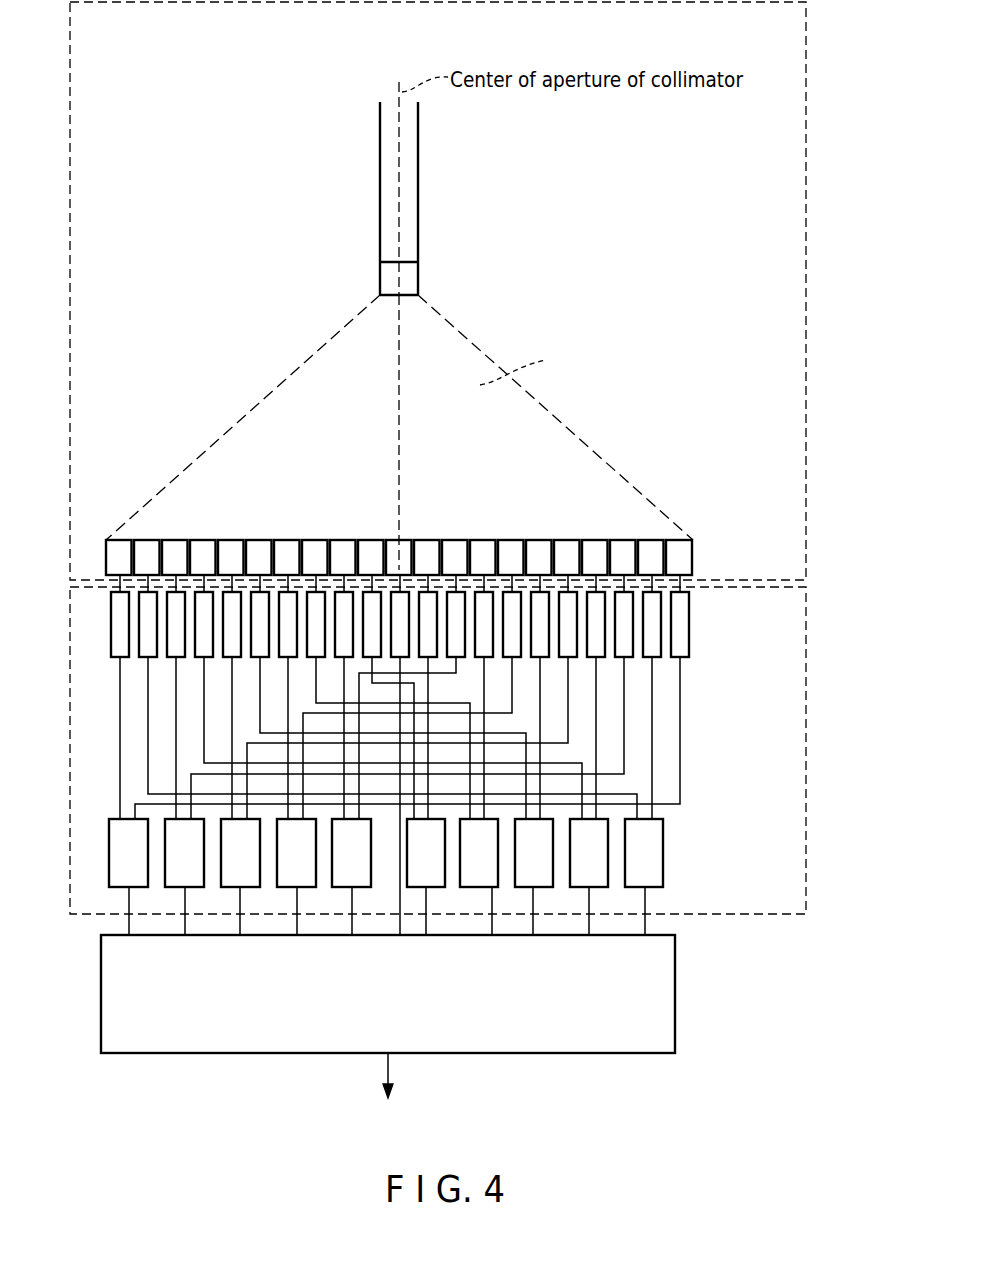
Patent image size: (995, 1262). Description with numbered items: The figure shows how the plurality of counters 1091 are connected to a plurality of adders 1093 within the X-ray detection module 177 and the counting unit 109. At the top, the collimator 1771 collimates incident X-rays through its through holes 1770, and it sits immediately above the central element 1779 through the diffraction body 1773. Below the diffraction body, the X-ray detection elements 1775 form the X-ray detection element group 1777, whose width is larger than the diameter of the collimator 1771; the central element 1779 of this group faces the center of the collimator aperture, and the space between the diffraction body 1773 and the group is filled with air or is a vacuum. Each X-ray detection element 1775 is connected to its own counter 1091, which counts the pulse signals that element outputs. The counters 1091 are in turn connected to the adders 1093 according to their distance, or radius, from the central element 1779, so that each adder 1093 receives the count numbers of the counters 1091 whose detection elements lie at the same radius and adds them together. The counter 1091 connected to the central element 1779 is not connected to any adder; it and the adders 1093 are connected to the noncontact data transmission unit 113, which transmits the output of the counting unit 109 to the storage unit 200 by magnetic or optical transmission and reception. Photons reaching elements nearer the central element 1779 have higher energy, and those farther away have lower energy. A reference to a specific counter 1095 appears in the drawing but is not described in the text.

The X-ray detection module 177 is at (806, 272).
The through hole 1770 is at (407, 125).
The collimator 1771 is at (418, 170).
The diffraction body 1773 is at (418, 278).
The X-ray detection element group 1777 is at (658, 473).
The central element 1779 is at (482, 528).
The X-ray detection element 1775 is at (693, 560).
The counting unit 109 is at (806, 738).
The counter 1091 is at (427, 592).
The central counter 1095 is at (398, 605).
The adder 1093 is at (663, 852).
The noncontact data transmission unit 113 is at (675, 998).
The storage unit 200 is at (389, 1090).